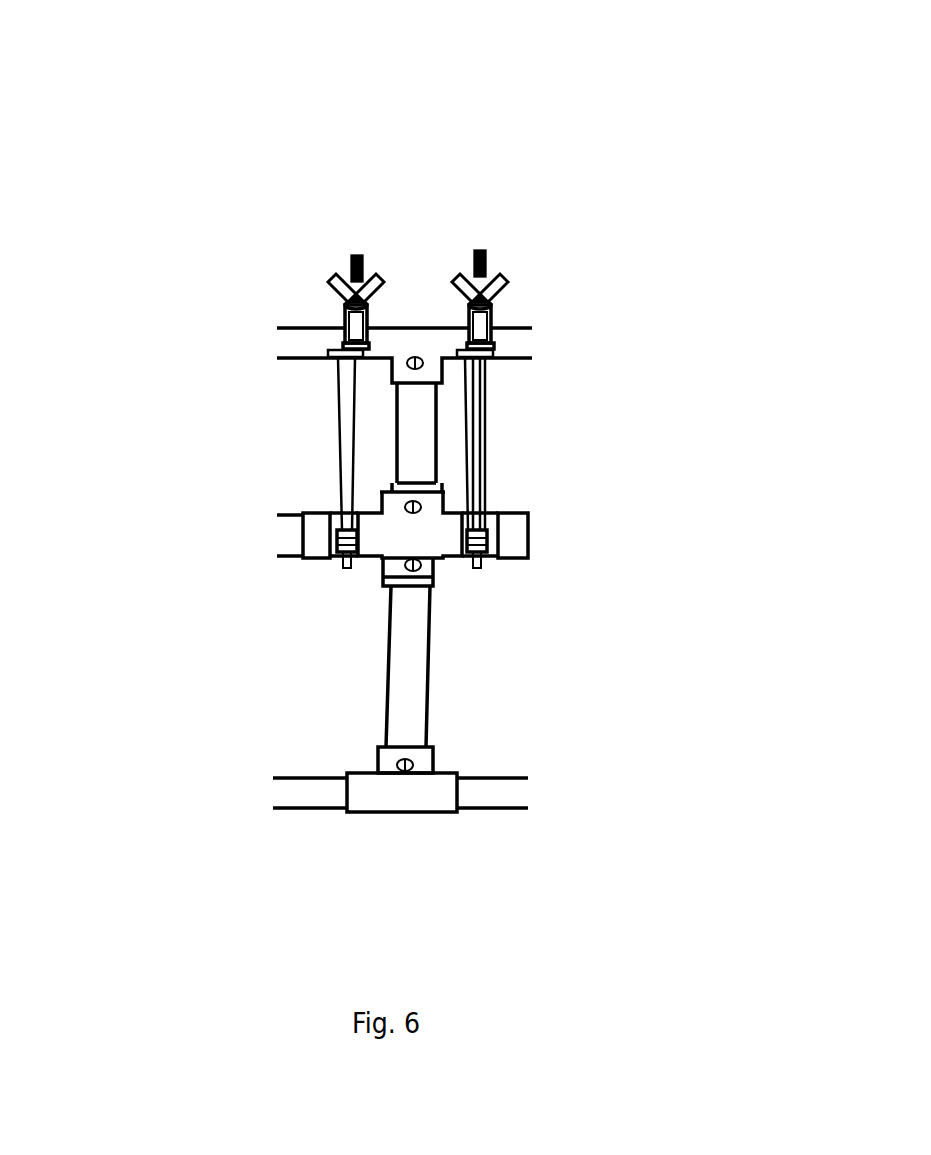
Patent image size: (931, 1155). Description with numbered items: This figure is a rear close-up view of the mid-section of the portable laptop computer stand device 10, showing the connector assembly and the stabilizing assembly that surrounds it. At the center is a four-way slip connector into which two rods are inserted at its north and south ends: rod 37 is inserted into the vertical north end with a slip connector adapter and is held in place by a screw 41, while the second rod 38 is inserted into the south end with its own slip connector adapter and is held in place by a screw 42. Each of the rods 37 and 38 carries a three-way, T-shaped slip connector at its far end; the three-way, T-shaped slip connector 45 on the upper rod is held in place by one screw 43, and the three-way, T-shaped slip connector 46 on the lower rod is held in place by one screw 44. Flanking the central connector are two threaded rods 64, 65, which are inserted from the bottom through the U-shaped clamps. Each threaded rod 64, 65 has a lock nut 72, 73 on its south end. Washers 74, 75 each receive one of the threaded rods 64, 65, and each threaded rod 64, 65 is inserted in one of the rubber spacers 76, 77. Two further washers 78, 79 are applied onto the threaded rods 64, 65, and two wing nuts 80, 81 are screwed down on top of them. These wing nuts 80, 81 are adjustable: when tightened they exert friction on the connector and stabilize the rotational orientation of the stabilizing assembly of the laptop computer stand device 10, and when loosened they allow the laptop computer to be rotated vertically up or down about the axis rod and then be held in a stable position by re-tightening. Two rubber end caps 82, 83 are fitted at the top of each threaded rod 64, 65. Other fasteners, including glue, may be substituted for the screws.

The portable laptop computer stand device 10 is at (400, 128).
The three-way, T-shaped slip connector 45 is at (410, 335).
The screw 43 is at (425, 366).
The rod 37 is at (412, 425).
The screw 41 is at (422, 505).
The screw 42 is at (422, 567).
The second rod 38 is at (400, 673).
The screw 44 is at (417, 762).
The three-way, T-shaped slip connector 46 is at (407, 800).
The lock nut 72 is at (528, 533).
The lock nut 73 is at (335, 553).
The threaded rod 65 is at (348, 427).
The threaded rod 64 is at (485, 437).
The rubber end cap 83 is at (352, 257).
The rubber end cap 82 is at (478, 248).
The wing nut 81 is at (338, 305).
The wing nut 80 is at (508, 277).
The washer 75 is at (340, 312).
The washer 74 is at (493, 307).
The rubber spacer 77 is at (342, 323).
The rubber spacer 76 is at (495, 320).
The washer 79 is at (340, 349).
The washer 78 is at (497, 345).